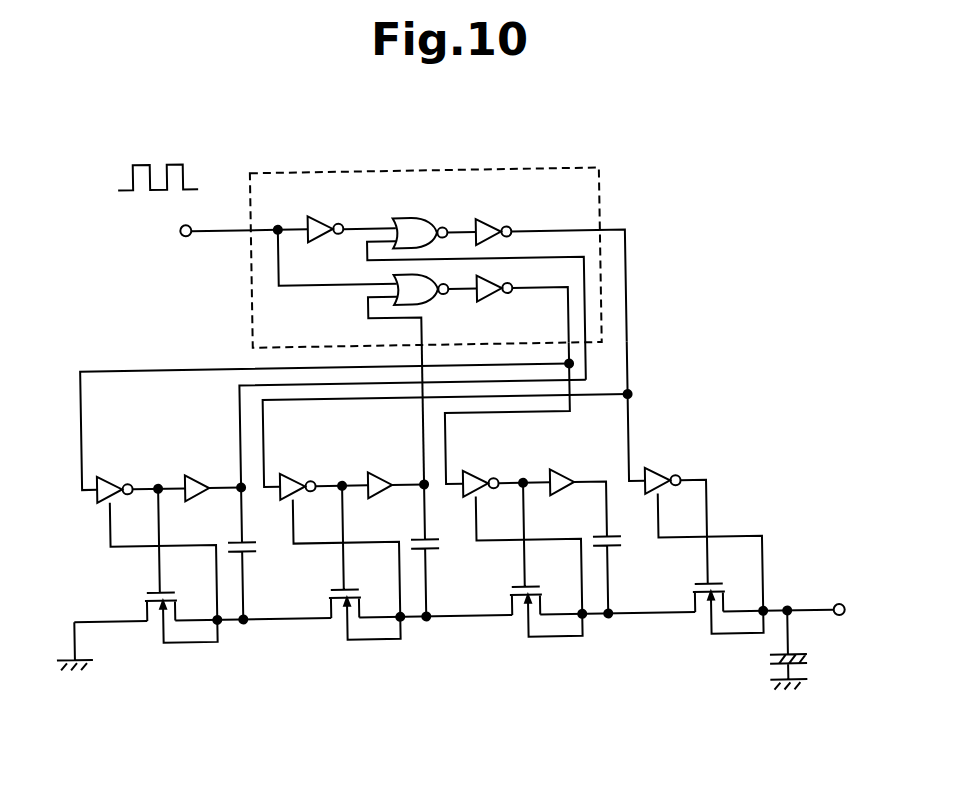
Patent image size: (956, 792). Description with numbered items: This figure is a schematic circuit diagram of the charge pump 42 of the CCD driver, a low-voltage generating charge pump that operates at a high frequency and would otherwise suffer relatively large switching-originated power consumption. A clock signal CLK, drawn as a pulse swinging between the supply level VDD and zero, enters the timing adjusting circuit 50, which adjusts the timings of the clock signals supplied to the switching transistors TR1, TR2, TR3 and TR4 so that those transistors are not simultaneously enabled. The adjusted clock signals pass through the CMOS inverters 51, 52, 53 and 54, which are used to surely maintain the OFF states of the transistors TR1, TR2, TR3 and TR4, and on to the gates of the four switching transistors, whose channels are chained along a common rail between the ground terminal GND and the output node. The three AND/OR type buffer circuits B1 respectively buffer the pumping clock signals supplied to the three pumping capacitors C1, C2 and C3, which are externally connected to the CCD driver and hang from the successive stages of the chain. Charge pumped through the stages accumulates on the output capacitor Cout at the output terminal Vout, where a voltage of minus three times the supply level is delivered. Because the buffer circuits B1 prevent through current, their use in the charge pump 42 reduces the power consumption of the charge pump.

The charge pump 42 is at (740, 211).
The timing adjusting circuit 50 is at (606, 187).
The CMOS inverter 51 is at (106, 471).
The CMOS inverter 52 is at (299, 475).
The CMOS inverter 53 is at (479, 473).
The CMOS inverter 54 is at (662, 475).
The buffer circuit B1 is at (198, 471).
The pumping capacitor C1 is at (250, 537).
The pumping capacitor C2 is at (430, 533).
The pumping capacitor C3 is at (613, 536).
The switching transistor TR1 is at (150, 587).
The switching transistor TR2 is at (335, 593).
The switching transistor TR3 is at (510, 589).
The switching transistor TR4 is at (694, 587).
The output capacitor Cout is at (791, 663).
The output voltage terminal Vout is at (830, 580).
The clock input terminal CLK is at (197, 228).
The supply voltage VDD is at (137, 176).
The ground GND is at (74, 663).